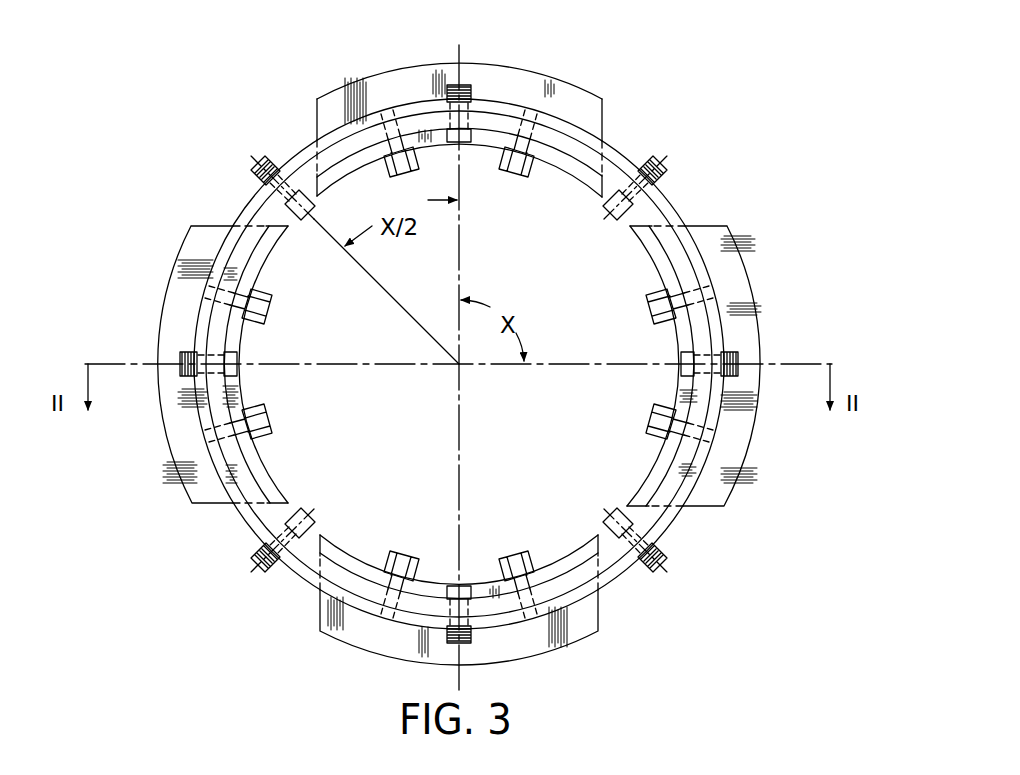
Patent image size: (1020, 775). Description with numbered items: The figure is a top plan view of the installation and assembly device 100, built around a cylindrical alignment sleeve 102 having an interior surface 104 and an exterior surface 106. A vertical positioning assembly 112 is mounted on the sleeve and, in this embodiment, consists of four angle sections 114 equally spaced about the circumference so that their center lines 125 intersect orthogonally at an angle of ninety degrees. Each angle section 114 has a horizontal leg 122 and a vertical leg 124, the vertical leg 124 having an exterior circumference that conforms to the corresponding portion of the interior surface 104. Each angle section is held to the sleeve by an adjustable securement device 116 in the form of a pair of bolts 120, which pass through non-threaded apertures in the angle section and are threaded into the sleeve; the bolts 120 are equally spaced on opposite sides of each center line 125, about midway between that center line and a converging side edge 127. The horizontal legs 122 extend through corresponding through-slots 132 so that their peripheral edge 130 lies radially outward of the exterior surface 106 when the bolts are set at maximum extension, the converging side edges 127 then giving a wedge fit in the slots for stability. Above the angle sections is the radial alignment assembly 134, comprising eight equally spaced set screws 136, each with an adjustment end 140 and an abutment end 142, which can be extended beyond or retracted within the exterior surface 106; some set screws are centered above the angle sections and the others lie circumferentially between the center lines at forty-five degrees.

The installation and assembly device 100 is at (249, 200).
The alignment sleeve 102 is at (655, 163).
The interior surface 104 is at (322, 533).
The exterior surface 106 is at (673, 204).
The vertical positioning assembly 112 is at (347, 82).
The angle section 114 is at (316, 99).
The adjustable securement device 116 is at (262, 327).
The bolt 120 is at (420, 170).
The horizontal leg 122 is at (737, 242).
The vertical leg 124 is at (252, 243).
The center line 125 is at (460, 443).
The converging side edge 127 is at (314, 117).
The peripheral edge 130 is at (574, 96).
The through-slot 132 is at (604, 138).
The radial alignment assembly 134 is at (672, 550).
The set screw 136 is at (262, 572).
The adjustment end 140 is at (311, 204).
The abutment end 142 is at (262, 160).